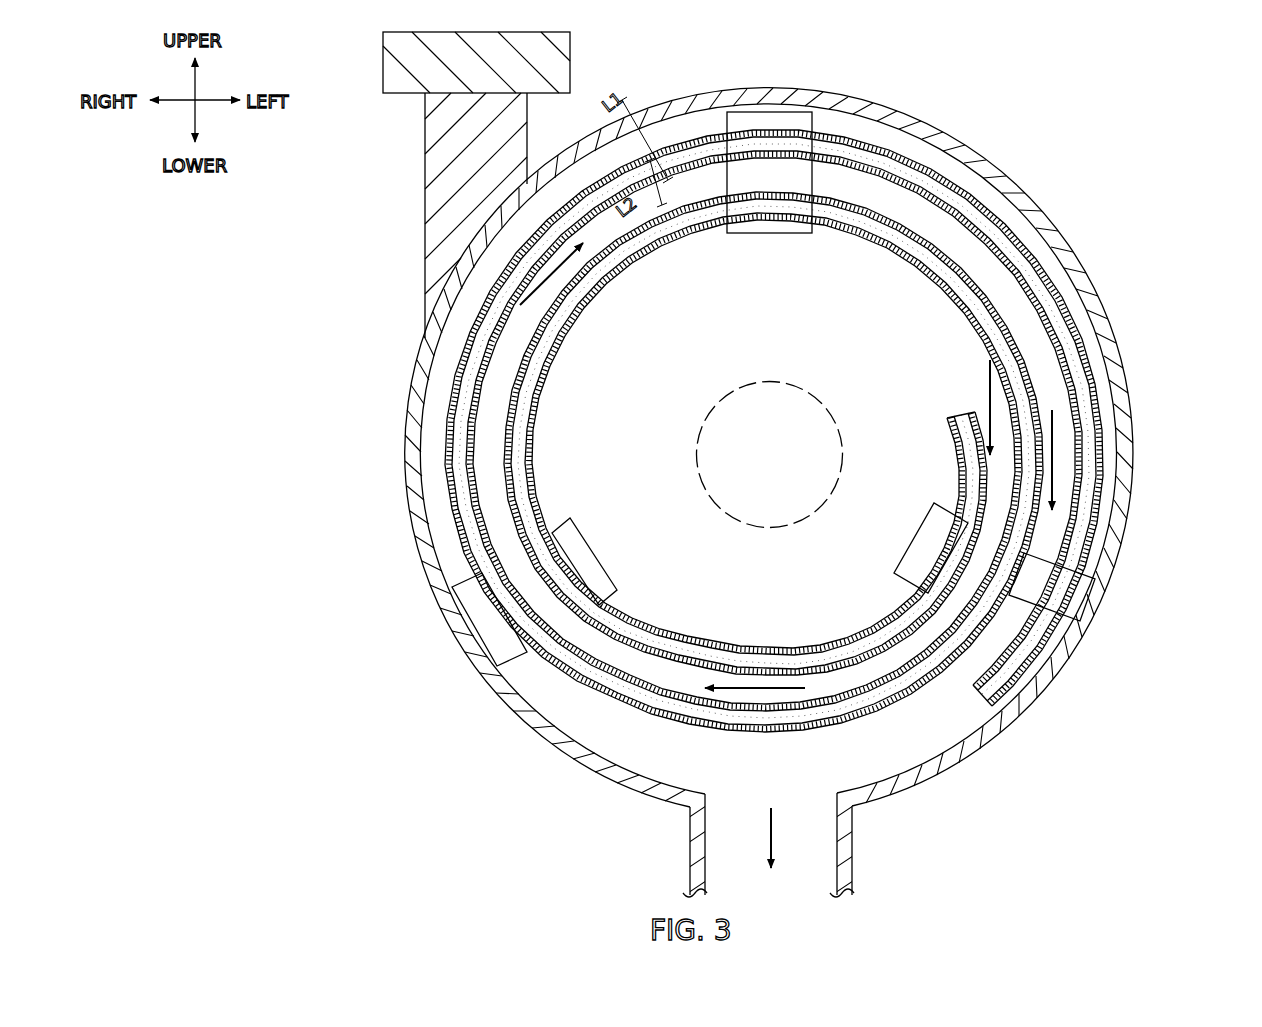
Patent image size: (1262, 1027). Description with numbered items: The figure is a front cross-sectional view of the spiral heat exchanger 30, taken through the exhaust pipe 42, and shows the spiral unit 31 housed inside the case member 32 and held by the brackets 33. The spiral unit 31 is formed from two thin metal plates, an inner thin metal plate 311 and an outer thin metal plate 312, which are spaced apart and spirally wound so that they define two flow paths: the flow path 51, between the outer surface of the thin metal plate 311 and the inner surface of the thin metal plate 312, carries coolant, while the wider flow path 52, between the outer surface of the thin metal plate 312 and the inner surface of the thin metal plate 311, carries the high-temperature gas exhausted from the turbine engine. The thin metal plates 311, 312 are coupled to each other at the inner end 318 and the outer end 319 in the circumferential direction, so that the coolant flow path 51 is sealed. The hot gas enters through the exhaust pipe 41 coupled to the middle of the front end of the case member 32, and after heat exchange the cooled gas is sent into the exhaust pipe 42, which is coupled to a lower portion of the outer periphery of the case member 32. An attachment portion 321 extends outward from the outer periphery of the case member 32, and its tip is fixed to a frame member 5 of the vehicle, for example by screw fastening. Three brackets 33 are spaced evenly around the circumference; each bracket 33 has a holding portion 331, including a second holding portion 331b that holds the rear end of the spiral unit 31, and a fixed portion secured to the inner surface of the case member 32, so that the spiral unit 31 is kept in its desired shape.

The frame member 5 is at (383, 66).
The attachment portion 321 is at (425, 135).
The spiral heat exchanger 30 is at (360, 290).
The spiral unit 31 is at (769, 431).
The thin metal plate 312 is at (508, 397).
The thin metal plate 311 is at (508, 440).
The flow path 51 is at (493, 500).
The flow path 52 is at (717, 431).
The exhaust pipe 41 is at (696, 465).
The case member 32 is at (688, 97).
The bracket 33 is at (822, 183).
The holding portion 331 is at (823, 394).
The second holding portion 331b is at (830, 130).
The end 318 is at (975, 405).
The end 319 is at (997, 692).
The exhaust pipe 42 is at (852, 848).